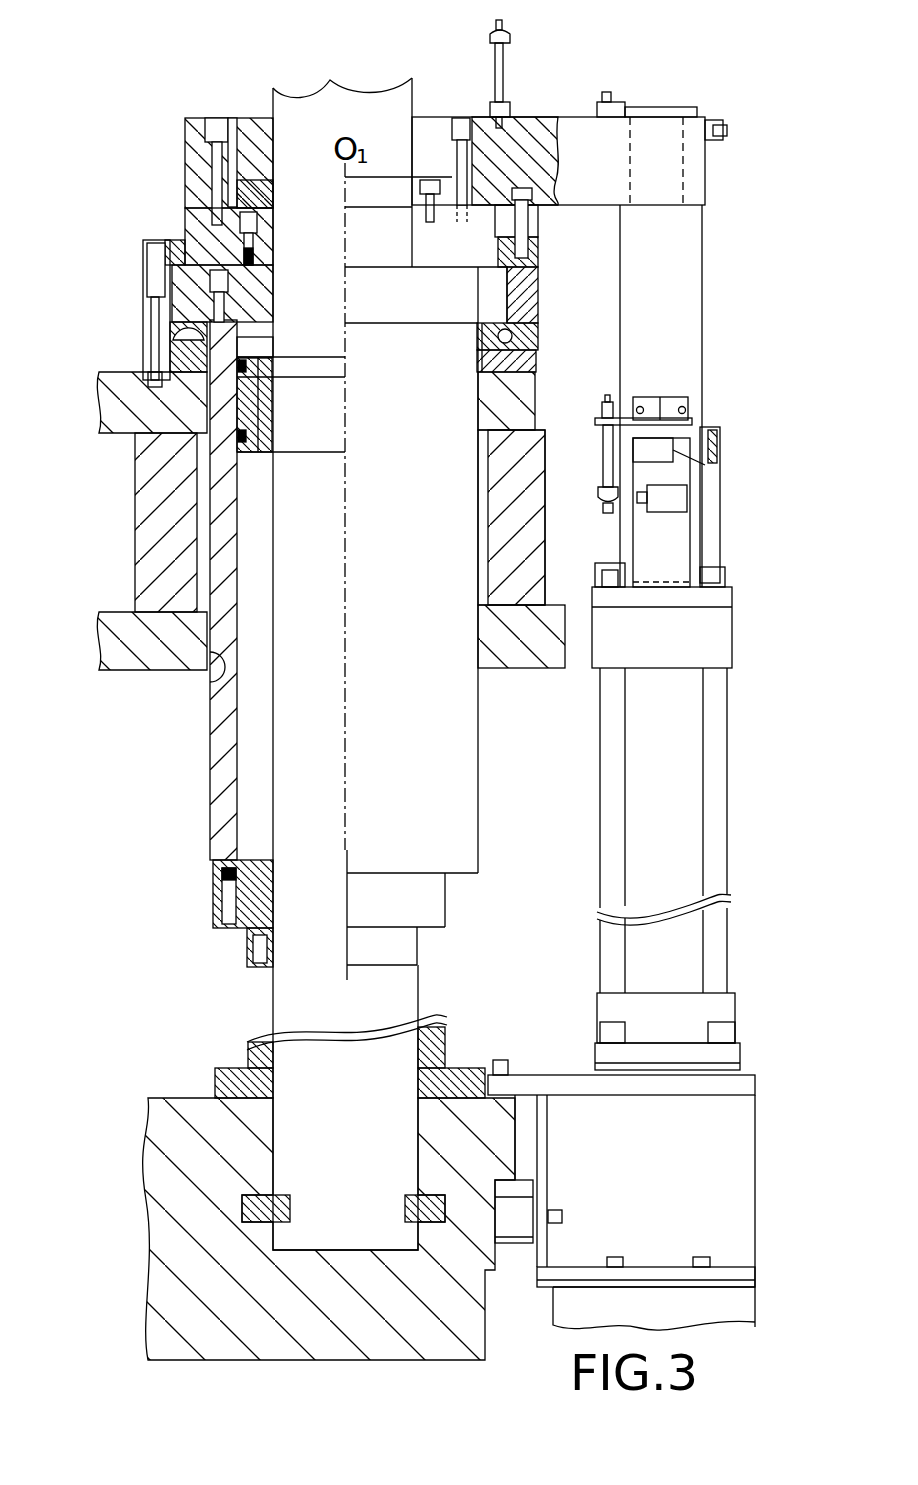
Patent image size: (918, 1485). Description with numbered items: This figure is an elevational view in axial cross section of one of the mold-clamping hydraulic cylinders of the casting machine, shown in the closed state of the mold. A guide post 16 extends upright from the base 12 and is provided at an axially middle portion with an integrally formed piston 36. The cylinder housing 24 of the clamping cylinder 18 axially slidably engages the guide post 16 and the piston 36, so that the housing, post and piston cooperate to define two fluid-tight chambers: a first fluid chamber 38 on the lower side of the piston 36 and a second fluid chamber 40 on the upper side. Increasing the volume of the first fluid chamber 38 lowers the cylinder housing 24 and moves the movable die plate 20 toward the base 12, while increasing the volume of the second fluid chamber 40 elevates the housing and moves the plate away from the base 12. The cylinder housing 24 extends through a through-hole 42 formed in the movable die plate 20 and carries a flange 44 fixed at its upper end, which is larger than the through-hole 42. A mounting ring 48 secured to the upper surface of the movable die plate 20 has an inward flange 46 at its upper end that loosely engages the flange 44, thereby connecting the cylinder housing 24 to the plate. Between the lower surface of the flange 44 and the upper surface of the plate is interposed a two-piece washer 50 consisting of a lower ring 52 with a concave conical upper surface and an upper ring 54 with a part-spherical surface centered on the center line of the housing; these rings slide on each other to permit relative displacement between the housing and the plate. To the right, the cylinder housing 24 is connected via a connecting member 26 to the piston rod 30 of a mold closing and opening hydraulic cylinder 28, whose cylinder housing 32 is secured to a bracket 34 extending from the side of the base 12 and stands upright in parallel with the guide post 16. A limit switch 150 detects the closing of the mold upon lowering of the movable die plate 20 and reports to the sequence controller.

The base 12 is at (180, 1120).
The guide post 16 is at (292, 996).
The clamping cylinder 18 is at (141, 185).
The movable die plate 20 is at (100, 410).
The cylinder housing 24 is at (465, 781).
The connecting member 26 is at (576, 125).
The mold closing and opening hydraulic cylinder 28 is at (756, 438).
The piston rod 30 is at (683, 278).
The cylinder housing 32 is at (692, 804).
The bracket 34 is at (543, 1086).
The piston 36 is at (247, 417).
The first fluid chamber 38 is at (257, 778).
The second fluid chamber 40 is at (262, 343).
The through-hole 42 is at (213, 688).
The flange 44 is at (180, 280).
The inward flange 46 is at (178, 241).
The mounting ring 48 is at (143, 305).
The two-piece washer 50 is at (150, 331).
The lower ring 52 is at (507, 339).
The upper ring 54 is at (495, 325).
The limit switch 150 is at (677, 499).